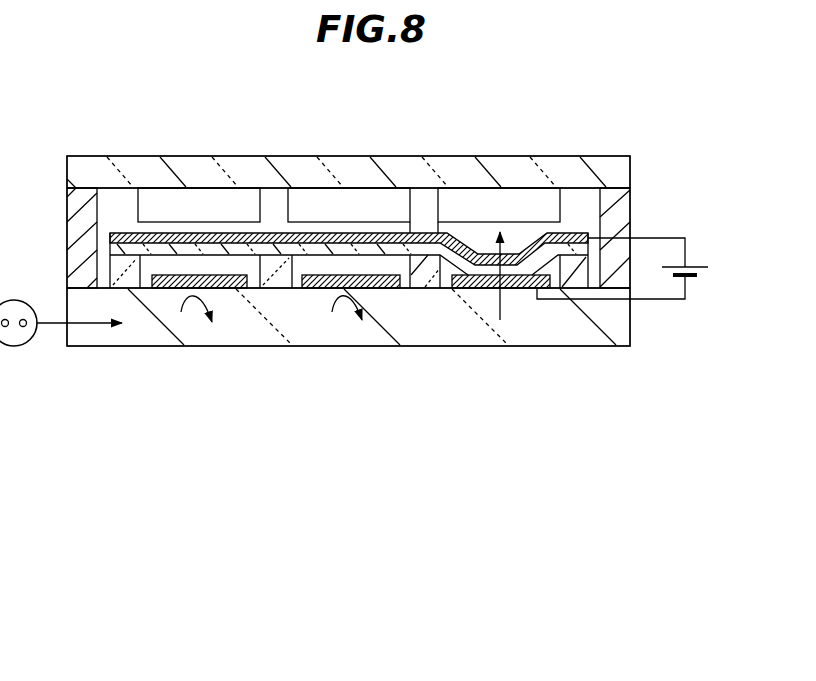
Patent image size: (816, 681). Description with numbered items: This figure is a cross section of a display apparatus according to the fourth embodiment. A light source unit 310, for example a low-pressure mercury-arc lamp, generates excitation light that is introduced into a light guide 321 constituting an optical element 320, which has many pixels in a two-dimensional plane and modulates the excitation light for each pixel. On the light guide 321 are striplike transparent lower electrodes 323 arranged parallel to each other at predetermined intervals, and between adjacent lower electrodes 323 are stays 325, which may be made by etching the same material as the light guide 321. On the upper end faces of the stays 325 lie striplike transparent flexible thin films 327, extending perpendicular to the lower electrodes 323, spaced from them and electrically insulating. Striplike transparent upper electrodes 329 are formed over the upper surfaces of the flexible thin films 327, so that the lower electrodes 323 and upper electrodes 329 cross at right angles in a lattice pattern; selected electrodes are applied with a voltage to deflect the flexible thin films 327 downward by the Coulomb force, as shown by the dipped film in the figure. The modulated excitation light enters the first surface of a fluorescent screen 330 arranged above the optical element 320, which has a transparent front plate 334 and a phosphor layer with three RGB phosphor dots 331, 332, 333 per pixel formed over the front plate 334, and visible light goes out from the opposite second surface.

The light source unit 310 is at (5, 300).
The optical element 320 is at (710, 230).
The light guide 321 is at (290, 333).
The lower electrode 323 is at (462, 288).
The stay 325 is at (128, 290).
The flexible thin film 327 is at (237, 290).
The upper electrode 329 is at (425, 233).
The fluorescent screen 330 is at (710, 156).
The phosphor dot 331 is at (157, 200).
The phosphor dot 332 is at (307, 184).
The phosphor dot 333 is at (457, 200).
The transparent front plate 334 is at (600, 158).